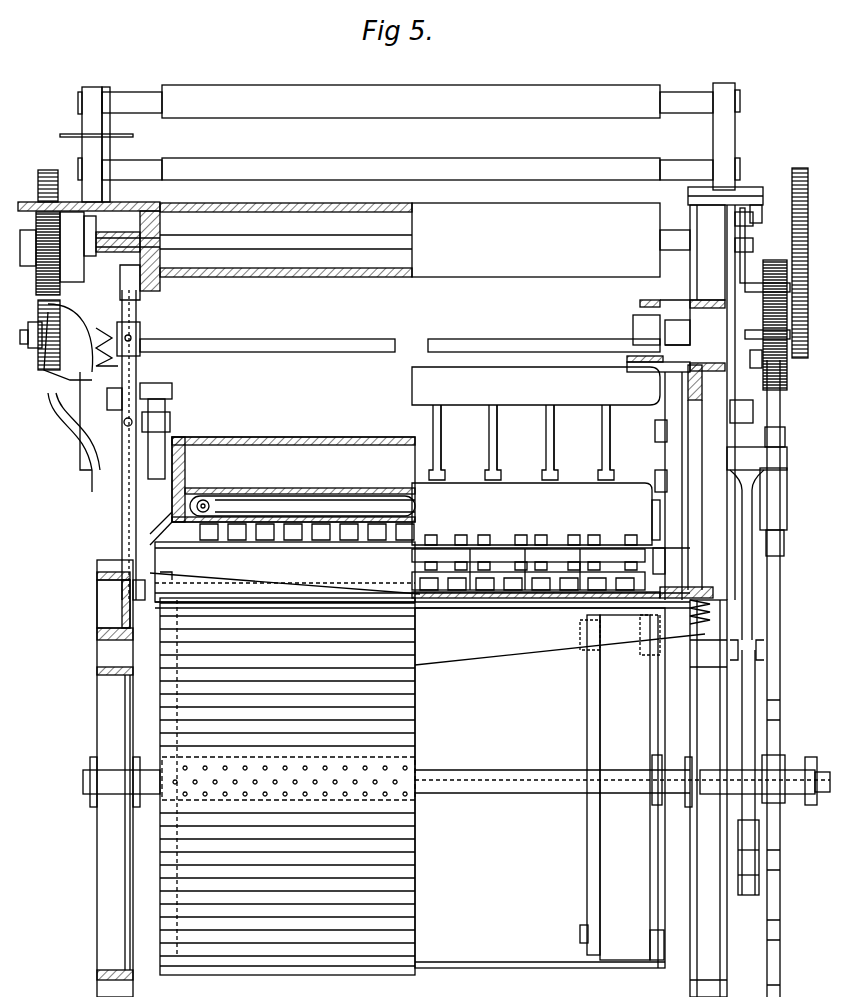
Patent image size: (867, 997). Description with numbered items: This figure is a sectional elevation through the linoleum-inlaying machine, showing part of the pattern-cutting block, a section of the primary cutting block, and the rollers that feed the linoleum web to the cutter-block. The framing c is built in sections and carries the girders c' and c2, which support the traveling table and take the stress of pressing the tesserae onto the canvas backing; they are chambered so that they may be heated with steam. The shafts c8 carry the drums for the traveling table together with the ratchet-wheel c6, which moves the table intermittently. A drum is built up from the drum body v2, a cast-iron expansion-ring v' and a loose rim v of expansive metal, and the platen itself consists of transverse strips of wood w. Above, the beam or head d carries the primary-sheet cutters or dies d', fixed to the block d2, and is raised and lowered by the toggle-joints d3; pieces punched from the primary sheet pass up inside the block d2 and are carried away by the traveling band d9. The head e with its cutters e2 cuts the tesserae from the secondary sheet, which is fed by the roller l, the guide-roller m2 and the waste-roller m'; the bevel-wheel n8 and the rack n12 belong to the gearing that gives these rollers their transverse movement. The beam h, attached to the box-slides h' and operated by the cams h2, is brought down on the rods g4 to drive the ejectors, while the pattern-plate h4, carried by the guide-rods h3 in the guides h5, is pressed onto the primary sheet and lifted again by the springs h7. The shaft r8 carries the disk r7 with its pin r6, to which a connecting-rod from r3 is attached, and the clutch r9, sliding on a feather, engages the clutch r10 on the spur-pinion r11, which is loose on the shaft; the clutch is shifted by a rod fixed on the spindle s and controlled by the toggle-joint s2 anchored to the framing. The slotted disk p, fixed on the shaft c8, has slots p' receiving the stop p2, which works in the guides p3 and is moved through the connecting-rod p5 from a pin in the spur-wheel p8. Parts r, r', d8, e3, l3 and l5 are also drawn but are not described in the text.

The waste-roller m' is at (407, 101).
The guide-roller m2 is at (407, 169).
The roller l is at (425, 240).
The rack n12 is at (30, 200).
The bevel-wheel n8 is at (110, 245).
The pin r6 is at (35, 327).
The disk r7 is at (44, 372).
The shaft r8 is at (400, 331).
The clutch r9 is at (138, 336).
The clutch r10 is at (110, 325).
The spur-pinion r11 is at (46, 372).
The connecting-rod attachment r3 is at (182, 564).
The rod r is at (427, 614).
The bracket r' is at (121, 604).
The spindle s is at (124, 426).
The toggle-joint s2 is at (80, 432).
The beam or head d is at (293, 479).
The primary-sheet cutters d' is at (422, 575).
The block d2 is at (318, 494).
The toggle-joint d3 is at (168, 420).
The rail d8 is at (160, 516).
The traveling band d9 is at (293, 509).
The beam h is at (536, 386).
The box-slides h' is at (675, 317).
The cam h2 is at (640, 322).
The guide-rods h3 is at (652, 522).
The pattern-plate h4 is at (655, 568).
The guides h5 is at (693, 494).
The springs h7 is at (746, 592).
The rod g4 is at (532, 442).
The head e is at (532, 514).
The cutters e2 is at (486, 594).
The bar e3 is at (553, 560).
The framing c is at (412, 778).
The girder c' is at (712, 402).
The girder c2 is at (540, 788).
The ratchet-wheel c6 is at (748, 783).
The shaft c8 is at (456, 782).
The bolt l3 is at (754, 219).
The bolt l5 is at (755, 242).
The disk p is at (777, 282).
The slots p' is at (814, 678).
The stop p2 is at (784, 556).
The guides p3 is at (787, 522).
The connecting-rod p5 is at (769, 442).
The spur-wheel p8 is at (754, 407).
The strips of wood w is at (287, 786).
The loose rim v is at (629, 791).
The expansion-ring v' is at (581, 785).
The drum v2 is at (658, 848).